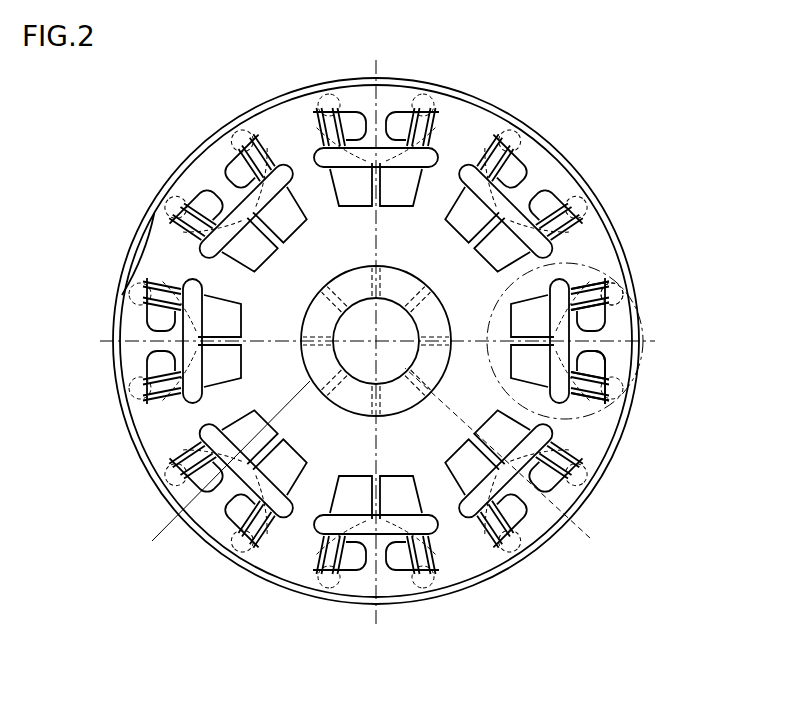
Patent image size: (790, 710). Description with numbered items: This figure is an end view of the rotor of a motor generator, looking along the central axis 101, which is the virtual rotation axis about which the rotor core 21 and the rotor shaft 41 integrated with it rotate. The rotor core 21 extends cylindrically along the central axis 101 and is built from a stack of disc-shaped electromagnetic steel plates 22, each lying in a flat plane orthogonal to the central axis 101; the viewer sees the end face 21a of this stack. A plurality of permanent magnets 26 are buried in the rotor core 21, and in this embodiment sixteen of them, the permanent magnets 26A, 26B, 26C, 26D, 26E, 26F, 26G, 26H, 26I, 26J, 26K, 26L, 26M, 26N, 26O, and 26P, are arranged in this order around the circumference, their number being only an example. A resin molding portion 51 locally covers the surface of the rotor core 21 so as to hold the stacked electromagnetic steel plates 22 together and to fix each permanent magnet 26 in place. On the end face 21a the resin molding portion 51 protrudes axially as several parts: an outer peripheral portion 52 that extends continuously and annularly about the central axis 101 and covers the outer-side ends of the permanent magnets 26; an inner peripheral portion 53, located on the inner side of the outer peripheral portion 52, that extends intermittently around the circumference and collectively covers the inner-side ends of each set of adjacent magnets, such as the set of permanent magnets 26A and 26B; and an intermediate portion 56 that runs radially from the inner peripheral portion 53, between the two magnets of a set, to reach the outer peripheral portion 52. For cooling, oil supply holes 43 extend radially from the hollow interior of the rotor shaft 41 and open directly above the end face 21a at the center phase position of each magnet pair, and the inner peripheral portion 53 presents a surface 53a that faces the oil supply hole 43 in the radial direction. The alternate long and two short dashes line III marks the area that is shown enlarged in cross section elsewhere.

The rotor core 21 is at (592, 182).
The end face 21a is at (308, 384).
The electromagnetic steel plate 22 is at (506, 133).
The permanent magnet 26 is at (384, 350).
The permanent magnet 26A is at (618, 292).
The permanent magnet 26B is at (618, 392).
The permanent magnet 26C is at (585, 474).
The permanent magnet 26D is at (512, 550).
The permanent magnet 26E is at (420, 585).
The permanent magnet 26F is at (329, 585).
The permanent magnet 26G is at (243, 550).
The permanent magnet 26H is at (170, 478).
The permanent magnet 26I is at (135, 392).
The permanent magnet 26J is at (133, 294).
The permanent magnet 26K is at (168, 208).
The permanent magnet 26L is at (240, 132).
The permanent magnet 26M is at (328, 97).
The permanent magnet 26N is at (423, 97).
The permanent magnet 26O is at (515, 135).
The permanent magnet 26P is at (585, 212).
The rotor shaft 41 is at (217, 467).
The oil supply hole 43 is at (513, 461).
The resin molding portion 51 is at (183, 170).
The outer peripheral portion 52 is at (600, 312).
The inner peripheral portion 53 is at (600, 372).
The surface 53a is at (612, 413).
The intermediate portion 56 is at (612, 339).
The central axis 101 is at (376, 341).
The alternate long and two short dashes line III is at (645, 352).